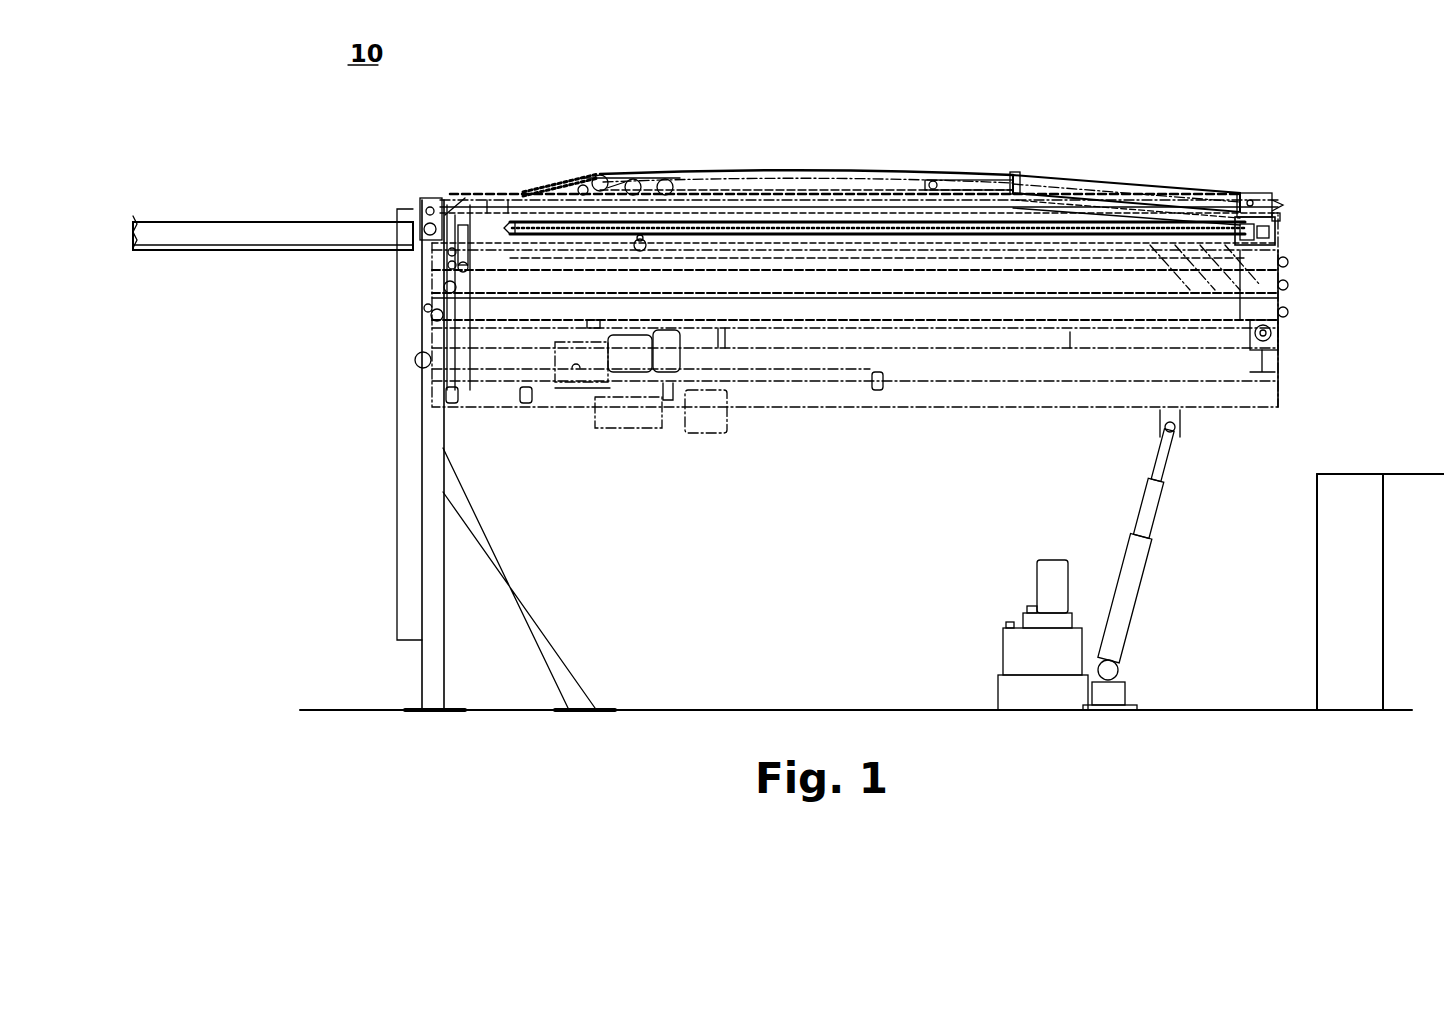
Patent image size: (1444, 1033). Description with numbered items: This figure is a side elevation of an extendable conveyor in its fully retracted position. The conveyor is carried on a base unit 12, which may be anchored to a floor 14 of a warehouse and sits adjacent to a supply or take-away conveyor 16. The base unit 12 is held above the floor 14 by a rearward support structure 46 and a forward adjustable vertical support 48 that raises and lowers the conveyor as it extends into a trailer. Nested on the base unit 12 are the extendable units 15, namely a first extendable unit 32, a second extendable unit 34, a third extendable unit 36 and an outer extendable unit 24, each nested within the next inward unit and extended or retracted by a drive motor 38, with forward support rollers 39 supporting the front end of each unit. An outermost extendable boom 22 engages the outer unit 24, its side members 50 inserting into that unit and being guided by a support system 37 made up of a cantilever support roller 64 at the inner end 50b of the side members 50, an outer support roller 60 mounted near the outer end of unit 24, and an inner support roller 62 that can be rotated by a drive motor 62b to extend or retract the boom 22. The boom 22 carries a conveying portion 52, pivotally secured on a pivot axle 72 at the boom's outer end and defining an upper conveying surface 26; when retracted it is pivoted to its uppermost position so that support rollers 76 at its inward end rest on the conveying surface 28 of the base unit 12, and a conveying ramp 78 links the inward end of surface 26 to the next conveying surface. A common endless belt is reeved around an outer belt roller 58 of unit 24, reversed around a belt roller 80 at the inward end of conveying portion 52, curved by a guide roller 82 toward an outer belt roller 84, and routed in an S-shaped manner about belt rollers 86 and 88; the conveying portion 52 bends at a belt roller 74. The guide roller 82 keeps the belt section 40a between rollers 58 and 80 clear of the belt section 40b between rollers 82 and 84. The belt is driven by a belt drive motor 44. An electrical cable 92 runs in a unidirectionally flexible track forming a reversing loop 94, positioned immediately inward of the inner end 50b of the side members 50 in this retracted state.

The base unit 12 is at (973, 393).
The floor 14 is at (370, 710).
The extendable units 15 is at (840, 305).
The supply or take-away conveyor 16 is at (298, 237).
The extendable boom 22 is at (1190, 195).
The outer extendable unit 24 is at (1277, 237).
The upper conveying surface 26 is at (870, 172).
The conveying surface of base unit 28 is at (490, 195).
The first extendable unit 32 is at (1267, 307).
The second extendable unit 34 is at (1273, 278).
The third extendable unit 36 is at (1280, 257).
The support system 37 is at (543, 250).
The drive motor 38 is at (627, 423).
The forward support rollers 39 is at (1275, 335).
The belt section 40a is at (1045, 200).
The belt section 40b is at (1100, 197).
The belt drive motor 44 is at (705, 423).
The rearward support structure 46 is at (432, 535).
The adjustable vertical support 48 is at (1147, 585).
The side members 50 is at (735, 250).
The inner end of side members 50b is at (510, 228).
The conveying portion 52 is at (800, 173).
The outer belt roller 58 is at (1282, 213).
The outer support roller 60 is at (1220, 242).
The inner support roller 62 is at (645, 255).
The drive motor 62b is at (628, 250).
The cantilever support roller 64 is at (508, 208).
The pivot axle 72 is at (1250, 193).
The belt roller 74 is at (1010, 183).
The support rollers 76 is at (585, 175).
The conveying ramp 78 is at (557, 180).
The belt roller 80 is at (663, 180).
The guide roller 82 is at (937, 180).
The outer belt roller 84 is at (1273, 203).
The belt roller 86 is at (600, 177).
The belt roller 88 is at (630, 175).
The electrical cable 92 is at (858, 230).
The reversing loop 94 is at (458, 197).